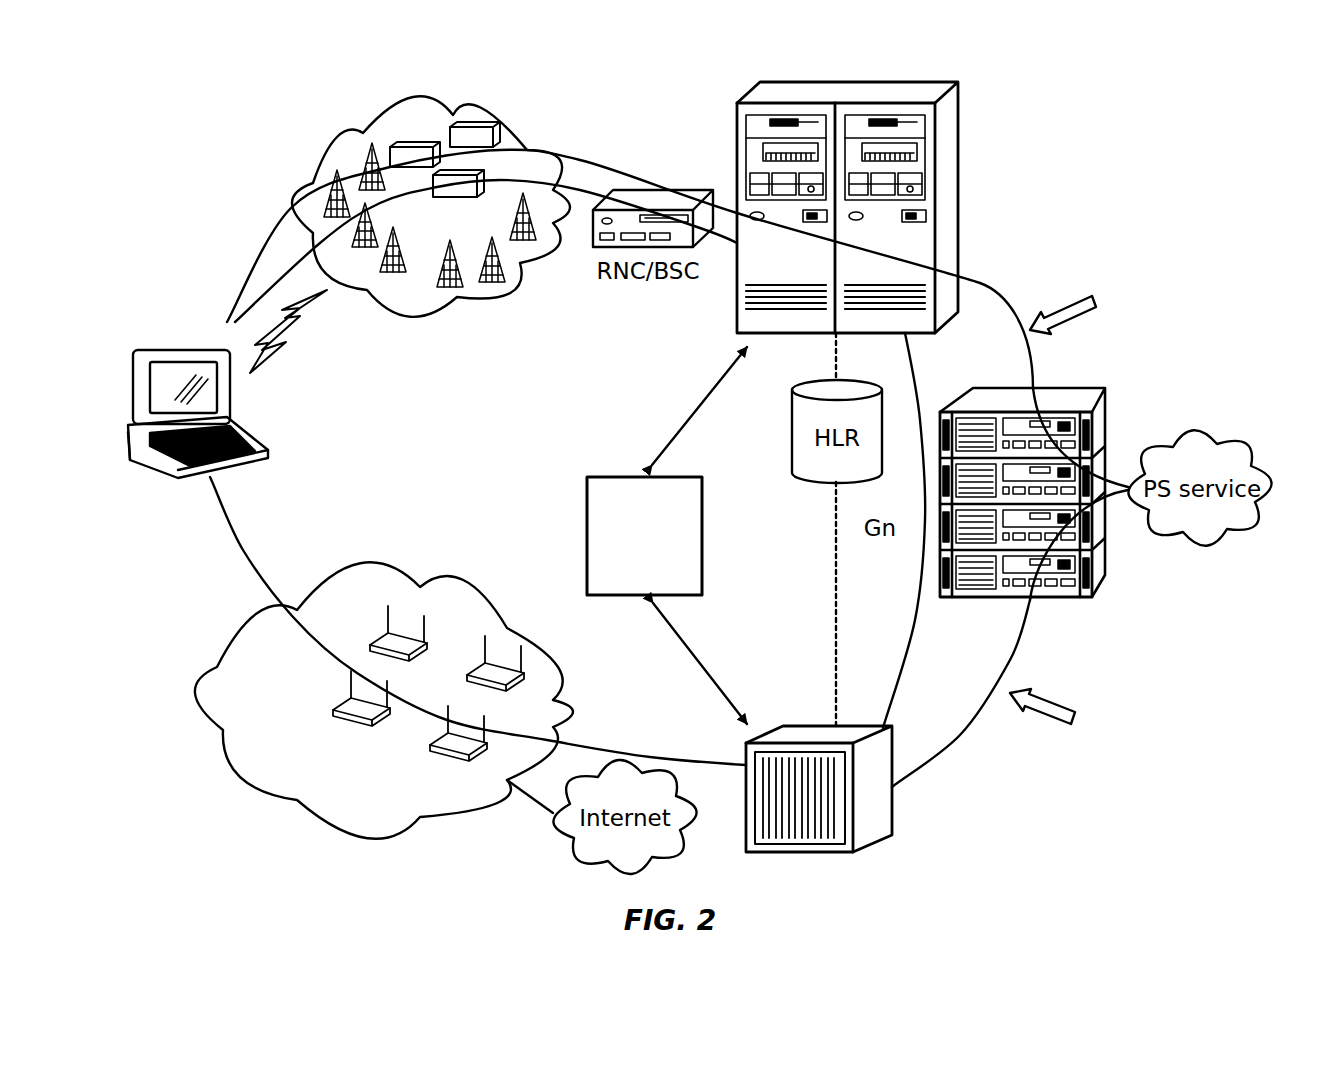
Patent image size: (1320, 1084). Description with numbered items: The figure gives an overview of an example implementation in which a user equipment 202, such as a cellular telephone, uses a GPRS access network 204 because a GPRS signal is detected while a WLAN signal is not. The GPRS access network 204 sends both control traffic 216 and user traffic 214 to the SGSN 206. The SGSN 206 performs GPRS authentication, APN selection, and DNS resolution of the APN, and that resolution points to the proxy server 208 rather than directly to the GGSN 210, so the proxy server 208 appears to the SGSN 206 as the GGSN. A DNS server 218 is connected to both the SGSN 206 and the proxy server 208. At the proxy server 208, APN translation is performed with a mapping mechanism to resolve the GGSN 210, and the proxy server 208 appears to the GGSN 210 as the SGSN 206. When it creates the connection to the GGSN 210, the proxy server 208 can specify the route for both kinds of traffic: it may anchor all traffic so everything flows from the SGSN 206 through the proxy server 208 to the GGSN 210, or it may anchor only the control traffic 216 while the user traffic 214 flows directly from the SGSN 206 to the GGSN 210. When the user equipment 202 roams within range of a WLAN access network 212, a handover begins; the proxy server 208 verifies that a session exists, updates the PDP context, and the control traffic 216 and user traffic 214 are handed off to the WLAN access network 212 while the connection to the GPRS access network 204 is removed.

The user equipment 202 is at (181, 345).
The GPRS access network 204 is at (306, 150).
The SGSN 206 is at (967, 152).
The proxy server 208 is at (903, 810).
The GGSN 210 is at (998, 605).
The WLAN access network 212 is at (281, 802).
The user traffic 214 is at (1067, 306).
The control traffic 216 is at (1046, 727).
The DNS server 218 is at (626, 583).